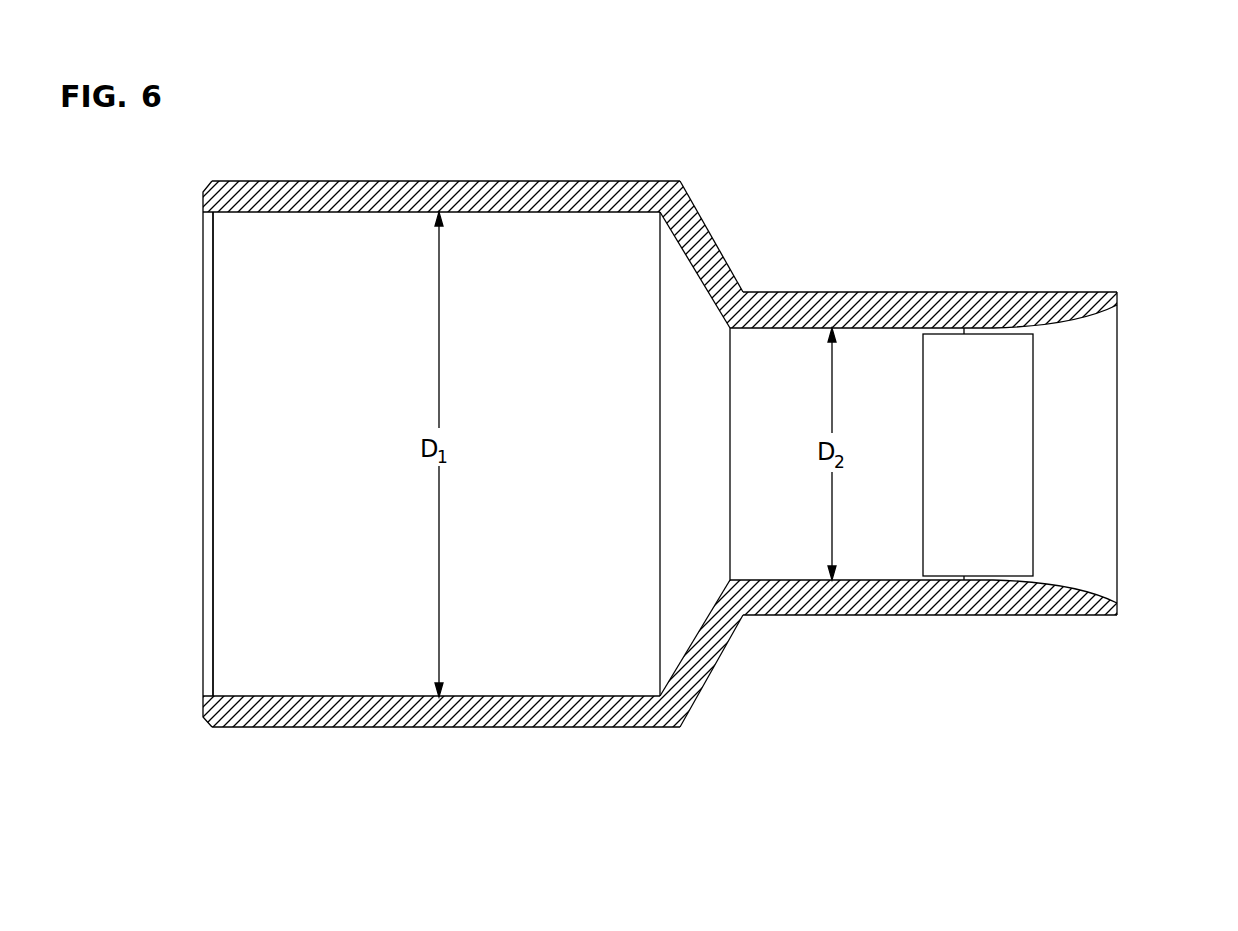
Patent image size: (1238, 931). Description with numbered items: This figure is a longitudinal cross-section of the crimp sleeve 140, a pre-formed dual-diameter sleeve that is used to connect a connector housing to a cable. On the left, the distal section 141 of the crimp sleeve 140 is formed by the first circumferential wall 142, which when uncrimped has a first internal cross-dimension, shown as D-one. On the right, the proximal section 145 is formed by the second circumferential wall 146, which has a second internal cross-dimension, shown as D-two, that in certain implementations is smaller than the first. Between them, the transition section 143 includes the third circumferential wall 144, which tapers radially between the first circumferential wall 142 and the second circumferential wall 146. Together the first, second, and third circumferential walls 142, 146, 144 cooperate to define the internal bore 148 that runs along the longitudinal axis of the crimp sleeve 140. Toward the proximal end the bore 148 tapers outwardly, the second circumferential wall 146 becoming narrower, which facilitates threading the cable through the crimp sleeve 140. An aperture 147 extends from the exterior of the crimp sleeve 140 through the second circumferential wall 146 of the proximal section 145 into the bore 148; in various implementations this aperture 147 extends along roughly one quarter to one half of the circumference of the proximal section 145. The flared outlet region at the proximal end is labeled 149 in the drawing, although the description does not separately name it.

The crimp sleeve 140 is at (1104, 280).
The distal section 141 is at (518, 181).
The first circumferential wall 142 is at (447, 717).
The transition section 143 is at (710, 237).
The third circumferential wall 144 is at (703, 660).
The proximal section 145 is at (910, 292).
The second circumferential wall 146 is at (913, 605).
The aperture 147 is at (923, 430).
The internal bore 148 is at (280, 212).
The flared outlet end 149 is at (1065, 321).